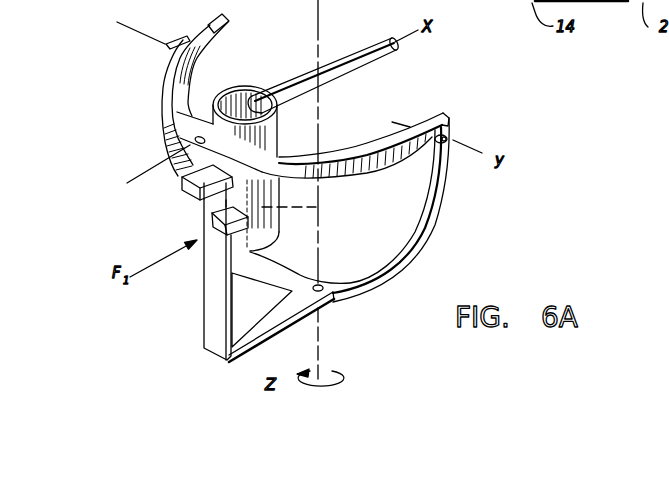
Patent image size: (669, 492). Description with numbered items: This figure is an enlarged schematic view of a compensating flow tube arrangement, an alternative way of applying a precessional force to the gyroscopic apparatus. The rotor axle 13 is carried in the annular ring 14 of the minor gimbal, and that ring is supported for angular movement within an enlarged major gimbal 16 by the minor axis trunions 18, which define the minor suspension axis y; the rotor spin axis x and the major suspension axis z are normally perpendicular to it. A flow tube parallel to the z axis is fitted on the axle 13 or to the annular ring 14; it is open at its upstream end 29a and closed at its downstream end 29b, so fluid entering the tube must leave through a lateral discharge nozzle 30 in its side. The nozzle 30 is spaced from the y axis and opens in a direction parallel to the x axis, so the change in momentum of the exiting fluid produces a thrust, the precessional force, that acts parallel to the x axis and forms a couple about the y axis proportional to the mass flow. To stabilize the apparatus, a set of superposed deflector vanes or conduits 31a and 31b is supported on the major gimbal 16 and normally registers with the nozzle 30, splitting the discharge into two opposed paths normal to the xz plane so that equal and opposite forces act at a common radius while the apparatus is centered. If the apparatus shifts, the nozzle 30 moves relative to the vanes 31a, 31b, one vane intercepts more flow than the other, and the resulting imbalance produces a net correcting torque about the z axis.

The axle 13 is at (333, 62).
The annular ring 14 is at (217, 38).
The major gimbal 16 is at (427, 232).
The minor axis trunions 18 is at (452, 128).
The upstream end 29a is at (243, 96).
The downstream end 29b is at (283, 225).
The lateral discharge nozzle 30 is at (302, 208).
The deflector vane 31a is at (190, 188).
The deflector vane 31b is at (207, 280).